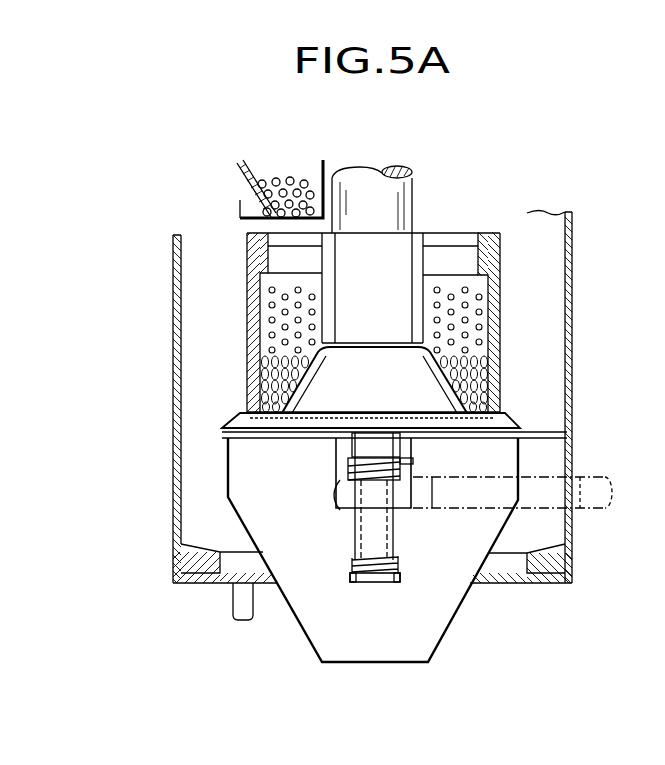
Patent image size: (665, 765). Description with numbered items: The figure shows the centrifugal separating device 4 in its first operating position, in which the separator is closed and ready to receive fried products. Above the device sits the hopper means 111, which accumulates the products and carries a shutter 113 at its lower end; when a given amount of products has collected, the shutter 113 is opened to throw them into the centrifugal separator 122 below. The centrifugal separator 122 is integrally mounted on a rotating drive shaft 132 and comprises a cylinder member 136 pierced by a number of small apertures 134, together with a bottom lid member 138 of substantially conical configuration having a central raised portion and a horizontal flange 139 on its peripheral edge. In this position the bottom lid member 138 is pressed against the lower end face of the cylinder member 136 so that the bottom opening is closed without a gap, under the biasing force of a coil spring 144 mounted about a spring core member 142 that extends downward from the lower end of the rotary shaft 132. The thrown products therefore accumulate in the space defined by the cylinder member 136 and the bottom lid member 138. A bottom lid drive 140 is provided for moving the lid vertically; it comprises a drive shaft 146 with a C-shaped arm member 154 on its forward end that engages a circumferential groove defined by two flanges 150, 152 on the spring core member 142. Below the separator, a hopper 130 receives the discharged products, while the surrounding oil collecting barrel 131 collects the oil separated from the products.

The centrifugal separating device 4 is at (150, 392).
The hopper means 111 is at (230, 182).
The shutter 113 is at (305, 188).
The centrifugal separator 122 is at (235, 397).
The hopper 130 is at (292, 610).
The oil collecting barrel 131 is at (175, 297).
The rotating drive shaft 132 is at (412, 195).
The small apertures 134 is at (247, 308).
The cylinder member 136 is at (510, 304).
The bottom lid member 138 is at (493, 394).
The horizontal flange 139 is at (568, 436).
The bottom lid drive 140 is at (607, 477).
The spring core member 142 is at (393, 578).
The coil spring 144 is at (398, 565).
The drive shaft 146 is at (586, 508).
The flange 150 is at (337, 450).
The flange 152 is at (338, 498).
The C-shaped arm member 154 is at (337, 462).